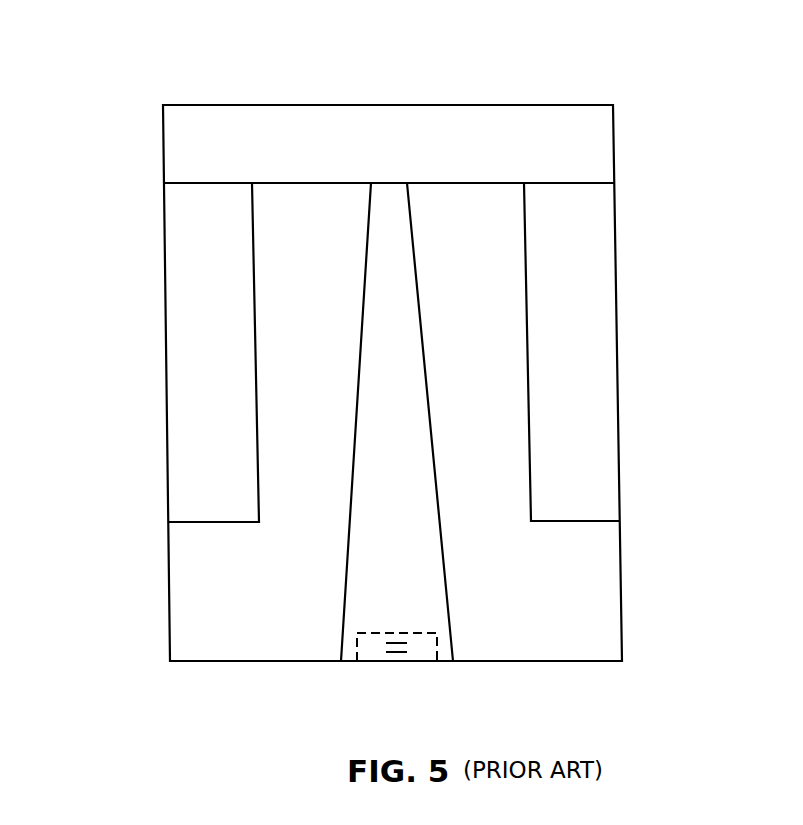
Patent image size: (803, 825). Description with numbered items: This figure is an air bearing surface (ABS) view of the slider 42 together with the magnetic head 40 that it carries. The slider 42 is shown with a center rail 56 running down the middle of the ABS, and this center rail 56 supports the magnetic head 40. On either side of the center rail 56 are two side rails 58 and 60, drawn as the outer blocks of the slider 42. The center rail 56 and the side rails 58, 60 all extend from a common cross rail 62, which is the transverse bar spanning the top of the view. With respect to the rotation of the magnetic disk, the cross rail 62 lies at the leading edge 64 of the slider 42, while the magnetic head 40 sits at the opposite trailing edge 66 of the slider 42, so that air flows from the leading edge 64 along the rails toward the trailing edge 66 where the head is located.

The magnetic head 40 is at (376, 662).
The slider 42 is at (168, 612).
The center rail 56 is at (375, 294).
The side rail 58 is at (180, 266).
The side rail 60 is at (598, 262).
The cross rail 62 is at (309, 117).
The leading edge 64 is at (489, 104).
The trailing edge 66 is at (521, 662).